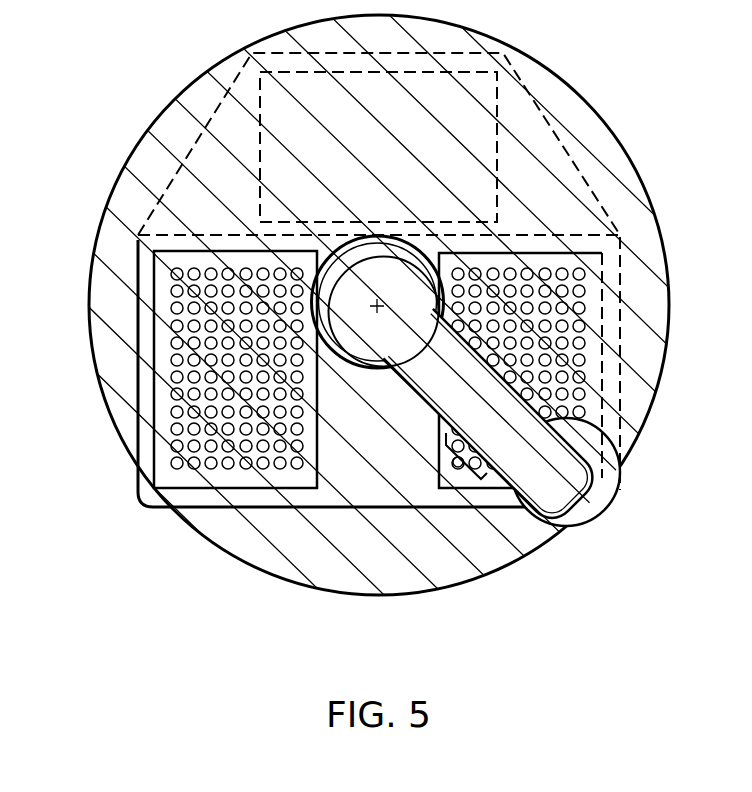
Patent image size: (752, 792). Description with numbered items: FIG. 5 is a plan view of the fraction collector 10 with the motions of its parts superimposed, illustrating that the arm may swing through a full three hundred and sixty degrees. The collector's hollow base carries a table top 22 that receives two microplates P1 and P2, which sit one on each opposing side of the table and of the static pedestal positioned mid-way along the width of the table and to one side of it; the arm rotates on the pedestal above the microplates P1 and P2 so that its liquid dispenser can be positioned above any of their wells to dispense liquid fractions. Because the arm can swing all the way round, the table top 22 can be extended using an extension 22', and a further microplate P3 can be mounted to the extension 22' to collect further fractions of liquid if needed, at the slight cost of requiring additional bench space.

The fraction collector 10 is at (113, 238).
The table top 22 is at (349, 443).
The extension 22' is at (417, 271).
The microplate P1 is at (152, 418).
The microplate P2 is at (602, 375).
The further microplate P3 is at (497, 93).